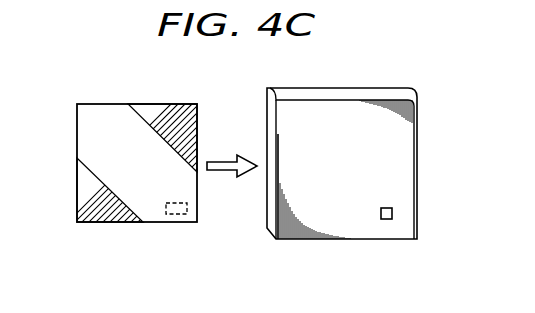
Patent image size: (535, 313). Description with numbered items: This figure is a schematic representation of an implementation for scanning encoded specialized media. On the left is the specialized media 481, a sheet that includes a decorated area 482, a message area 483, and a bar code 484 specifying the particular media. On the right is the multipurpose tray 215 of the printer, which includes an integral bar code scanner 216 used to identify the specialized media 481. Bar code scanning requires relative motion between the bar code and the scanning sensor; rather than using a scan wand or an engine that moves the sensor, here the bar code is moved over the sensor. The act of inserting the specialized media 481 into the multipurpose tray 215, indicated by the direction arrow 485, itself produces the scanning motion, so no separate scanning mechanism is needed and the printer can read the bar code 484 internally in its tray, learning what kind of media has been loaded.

The specialized media 481 is at (77, 134).
The decorated area 482 is at (171, 108).
The message area 483 is at (102, 108).
The bar code 484 is at (176, 203).
The direction arrow 485 is at (223, 171).
The multipurpose tray 215 is at (376, 98).
The bar code scanner 216 is at (385, 208).